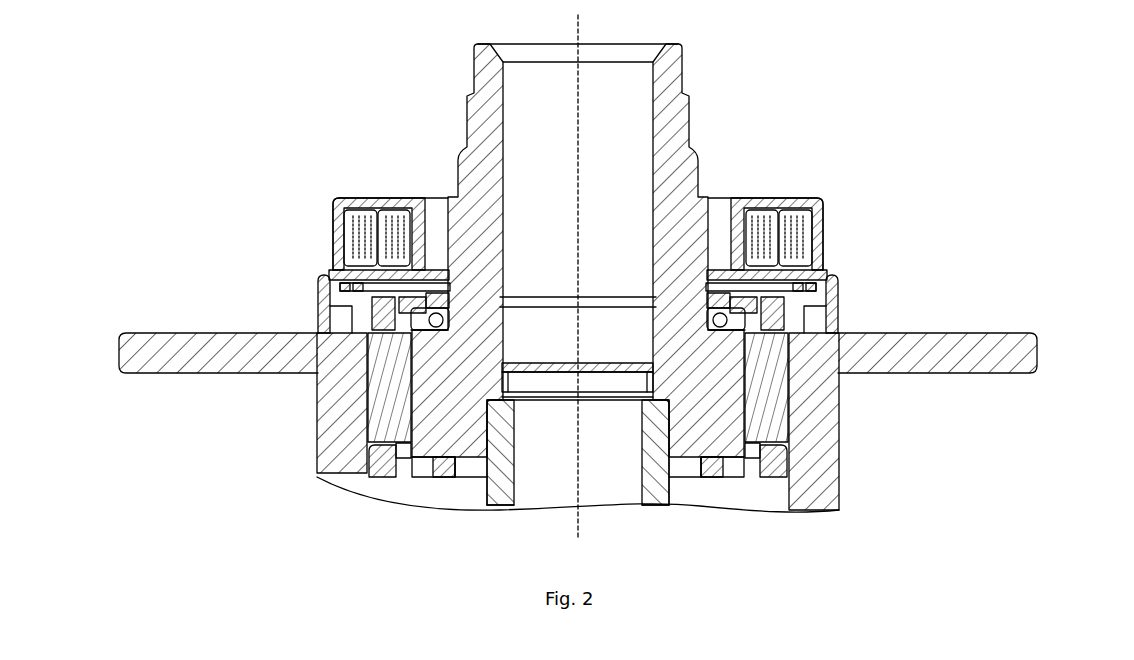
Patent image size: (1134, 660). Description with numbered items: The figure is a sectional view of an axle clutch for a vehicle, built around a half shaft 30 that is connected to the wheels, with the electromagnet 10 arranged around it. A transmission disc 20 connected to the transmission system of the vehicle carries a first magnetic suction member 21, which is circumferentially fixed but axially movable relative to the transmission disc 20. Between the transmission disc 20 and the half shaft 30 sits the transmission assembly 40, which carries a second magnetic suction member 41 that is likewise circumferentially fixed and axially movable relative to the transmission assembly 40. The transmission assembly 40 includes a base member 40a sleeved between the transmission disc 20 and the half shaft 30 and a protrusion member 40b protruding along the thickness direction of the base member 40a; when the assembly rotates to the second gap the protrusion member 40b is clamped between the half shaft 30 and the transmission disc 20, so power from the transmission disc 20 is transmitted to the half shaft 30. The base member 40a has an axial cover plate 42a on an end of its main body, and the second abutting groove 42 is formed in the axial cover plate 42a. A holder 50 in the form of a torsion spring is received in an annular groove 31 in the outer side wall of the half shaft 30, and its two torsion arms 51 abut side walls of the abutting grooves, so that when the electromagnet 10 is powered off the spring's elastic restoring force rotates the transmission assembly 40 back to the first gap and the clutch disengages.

The electromagnet 10 is at (815, 200).
The transmission disc 20 is at (870, 347).
The first magnetic suction member 21 is at (838, 294).
The half shaft 30 is at (690, 157).
The annular groove 31 is at (712, 313).
The transmission assembly 40 is at (950, 425).
The base member 40a is at (778, 445).
The protrusion member 40b is at (777, 367).
The second magnetic suction member 41 is at (740, 282).
The second abutting groove 42 is at (423, 310).
The axial cover plate 42a is at (735, 311).
The holder 50 is at (763, 307).
The torsion arm 51 is at (362, 360).